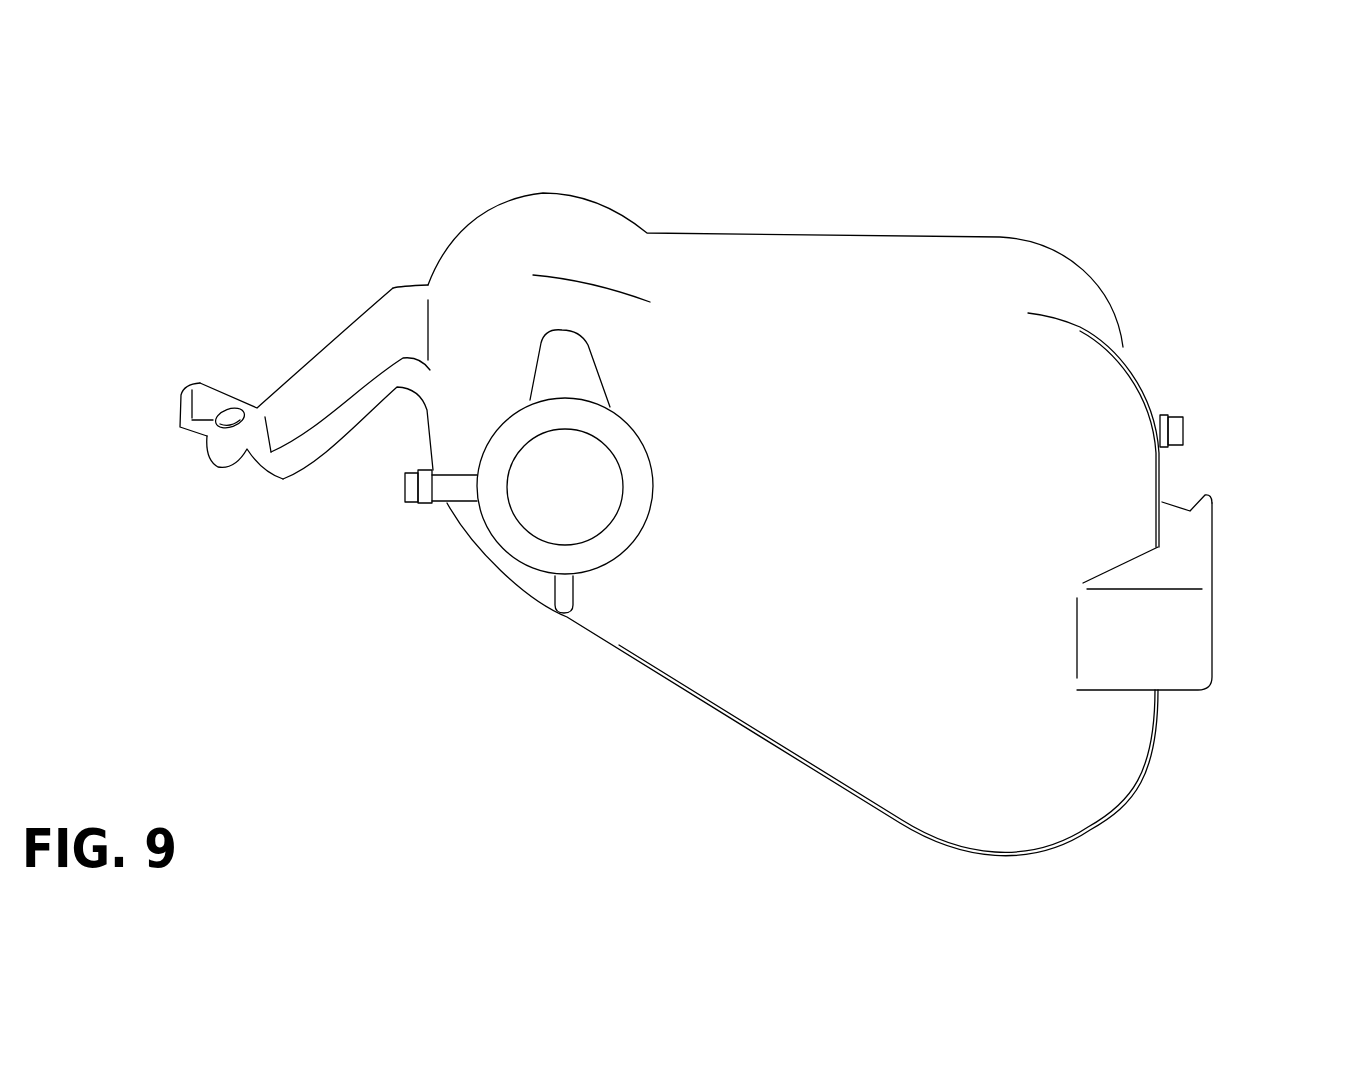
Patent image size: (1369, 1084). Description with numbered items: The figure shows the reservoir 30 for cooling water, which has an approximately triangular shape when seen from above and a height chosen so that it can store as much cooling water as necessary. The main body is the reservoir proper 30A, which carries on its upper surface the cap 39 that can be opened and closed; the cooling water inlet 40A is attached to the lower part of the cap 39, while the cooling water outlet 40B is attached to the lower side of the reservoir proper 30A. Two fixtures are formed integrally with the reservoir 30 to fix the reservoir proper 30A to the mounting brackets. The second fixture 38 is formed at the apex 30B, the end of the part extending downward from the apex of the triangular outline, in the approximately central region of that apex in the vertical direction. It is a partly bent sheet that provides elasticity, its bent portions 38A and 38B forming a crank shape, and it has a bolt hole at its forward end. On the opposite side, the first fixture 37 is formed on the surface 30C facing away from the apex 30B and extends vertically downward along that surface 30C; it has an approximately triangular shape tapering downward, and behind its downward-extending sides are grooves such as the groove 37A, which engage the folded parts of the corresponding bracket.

The reservoir 30 is at (951, 173).
The reservoir proper 30A is at (793, 688).
The apex 30B is at (423, 398).
The surface opposite to the apex 30C is at (1163, 720).
The first fixture 37 is at (1192, 635).
The groove 37A is at (1170, 508).
The second fixture 38 is at (317, 377).
The bent portion 38A is at (403, 313).
The bent portion 38B is at (283, 480).
The cap 39 is at (530, 542).
The cooling water inlet 40A is at (462, 492).
The cooling water outlet 40B is at (1180, 430).